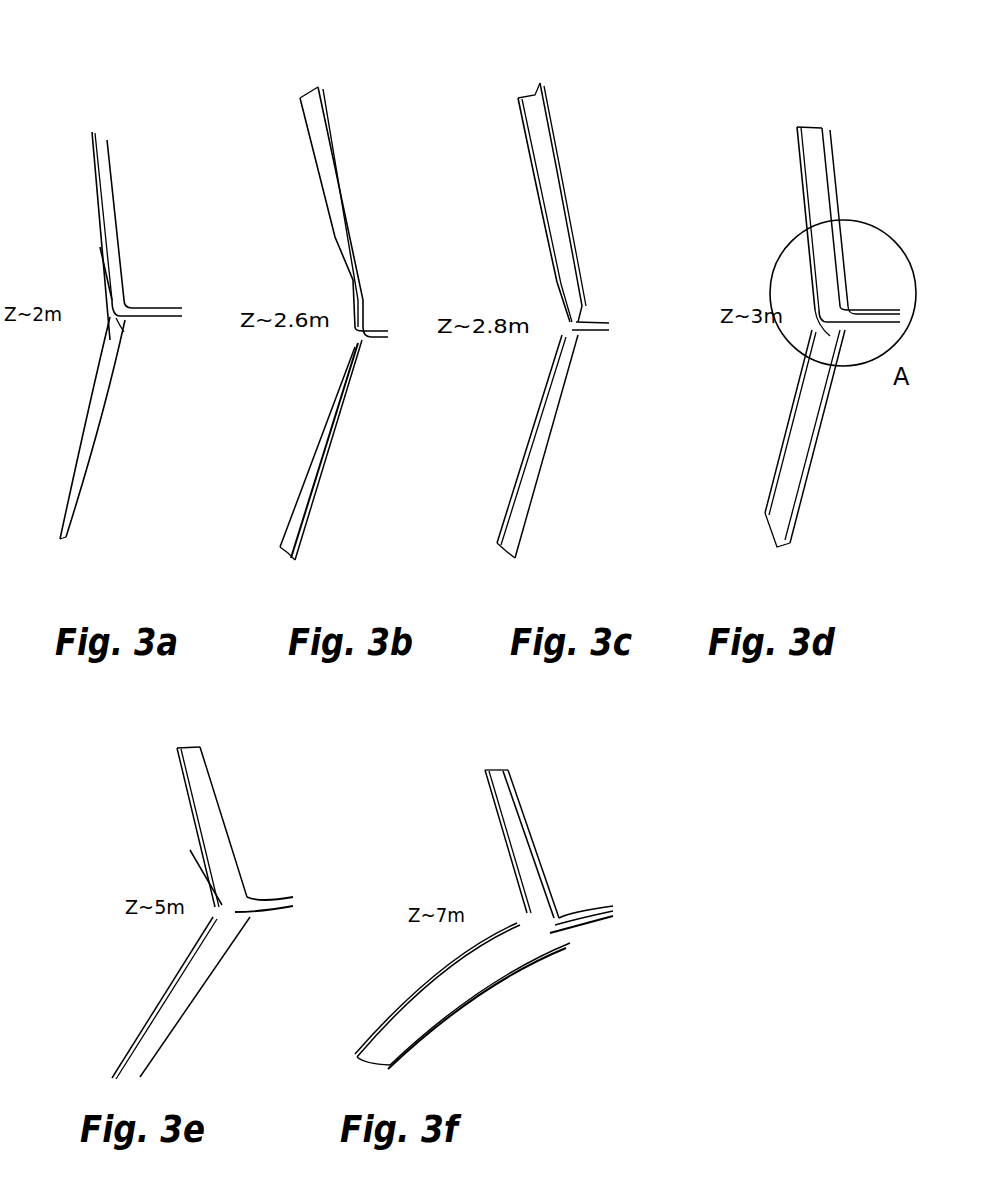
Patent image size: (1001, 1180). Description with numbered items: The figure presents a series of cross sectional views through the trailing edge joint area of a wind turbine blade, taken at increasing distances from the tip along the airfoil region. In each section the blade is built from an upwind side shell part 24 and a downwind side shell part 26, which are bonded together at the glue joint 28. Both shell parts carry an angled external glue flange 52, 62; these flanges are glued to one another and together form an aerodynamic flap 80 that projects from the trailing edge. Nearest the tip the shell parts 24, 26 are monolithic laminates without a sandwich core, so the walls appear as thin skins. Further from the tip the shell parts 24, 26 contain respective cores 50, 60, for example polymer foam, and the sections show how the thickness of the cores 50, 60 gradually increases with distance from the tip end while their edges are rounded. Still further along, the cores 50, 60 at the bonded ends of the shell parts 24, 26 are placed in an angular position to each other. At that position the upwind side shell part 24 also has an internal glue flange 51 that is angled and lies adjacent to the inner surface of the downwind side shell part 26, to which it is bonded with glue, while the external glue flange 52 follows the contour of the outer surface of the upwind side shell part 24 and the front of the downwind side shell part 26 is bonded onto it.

In FIG. 3A, the upwind side shell part 24 is at (97, 423).
In FIG. 3B, the upwind side shell part 24 is at (318, 508).
In FIG. 3C, the upwind side shell part 24 is at (533, 470).
In FIG. 3D, the upwind side shell part 24 is at (802, 448).
In FIG. 3F, the upwind side shell part 24 is at (452, 1007).
In FIG. 3A, the downwind side shell part 26 is at (107, 178).
In FIG. 3B, the downwind side shell part 26 is at (340, 145).
In FIG. 3C, the downwind side shell part 26 is at (538, 145).
In FIG. 3D, the downwind side shell part 26 is at (818, 178).
In FIG. 3F, the downwind side shell part 26 is at (532, 822).
In FIG. 3A, the glue joint 28 is at (104, 325).
In FIG. 3D, the glue joint 28 is at (785, 288).
In FIG. 3B, the core 50 is at (318, 462).
In FIG. 3F, the core 50 is at (410, 1025).
In FIG. 3F, the internal glue flange 51 is at (517, 887).
In FIG. 3A, the external glue flange 52 is at (160, 317).
In FIG. 3F, the external glue flange 52 is at (570, 933).
In FIG. 3B, the core 60 is at (330, 185).
In FIG. 3F, the core 60 is at (532, 868).
In FIG. 3A, the external glue flange 62 is at (163, 303).
In FIG. 3A, the aerodynamic flap 80 is at (197, 279).
In FIG. 3C, the aerodynamic flap 80 is at (597, 322).
In FIG. 3F, the aerodynamic flap 80 is at (597, 917).